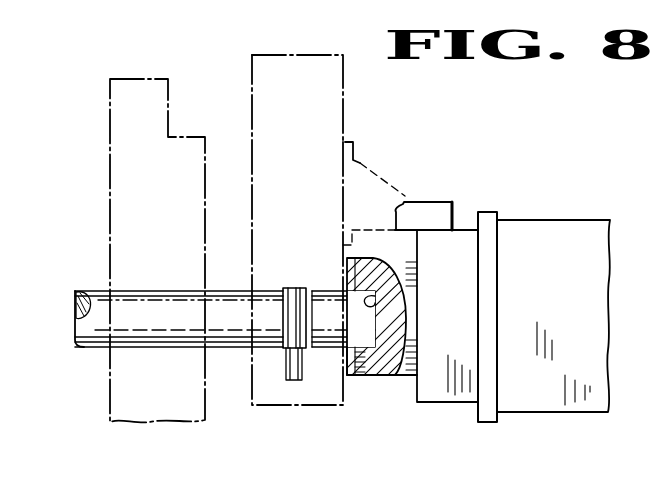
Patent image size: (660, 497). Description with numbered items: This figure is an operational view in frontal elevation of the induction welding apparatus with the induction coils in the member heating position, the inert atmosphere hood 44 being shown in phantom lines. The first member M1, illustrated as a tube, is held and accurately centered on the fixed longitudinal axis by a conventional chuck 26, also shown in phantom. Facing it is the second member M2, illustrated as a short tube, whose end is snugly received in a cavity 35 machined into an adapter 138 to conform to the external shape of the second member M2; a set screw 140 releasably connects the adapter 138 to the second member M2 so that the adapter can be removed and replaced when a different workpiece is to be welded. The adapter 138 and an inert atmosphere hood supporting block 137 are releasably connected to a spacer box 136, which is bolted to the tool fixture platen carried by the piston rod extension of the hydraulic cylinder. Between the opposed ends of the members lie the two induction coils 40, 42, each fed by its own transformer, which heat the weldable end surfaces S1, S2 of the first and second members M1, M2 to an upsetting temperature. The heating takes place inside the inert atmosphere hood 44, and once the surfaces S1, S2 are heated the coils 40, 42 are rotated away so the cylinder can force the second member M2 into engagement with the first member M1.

The chuck 26 is at (188, 135).
The inert atmosphere hood 44 is at (346, 100).
The induction coil 40 is at (296, 288).
The induction coil 42 is at (300, 300).
The cavity 35 is at (390, 301).
The set screw 140 is at (365, 353).
The adapter 138 is at (409, 378).
The inert atmosphere hood supporting block 137 is at (461, 222).
The spacer box 136 is at (528, 220).
The first member M1 is at (103, 295).
The second member M2 is at (378, 262).
The weldable end surface S1 is at (284, 318).
The weldable end surface S2 is at (302, 350).